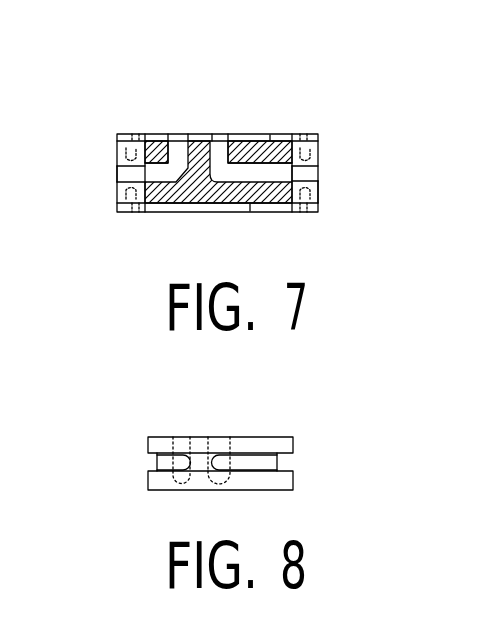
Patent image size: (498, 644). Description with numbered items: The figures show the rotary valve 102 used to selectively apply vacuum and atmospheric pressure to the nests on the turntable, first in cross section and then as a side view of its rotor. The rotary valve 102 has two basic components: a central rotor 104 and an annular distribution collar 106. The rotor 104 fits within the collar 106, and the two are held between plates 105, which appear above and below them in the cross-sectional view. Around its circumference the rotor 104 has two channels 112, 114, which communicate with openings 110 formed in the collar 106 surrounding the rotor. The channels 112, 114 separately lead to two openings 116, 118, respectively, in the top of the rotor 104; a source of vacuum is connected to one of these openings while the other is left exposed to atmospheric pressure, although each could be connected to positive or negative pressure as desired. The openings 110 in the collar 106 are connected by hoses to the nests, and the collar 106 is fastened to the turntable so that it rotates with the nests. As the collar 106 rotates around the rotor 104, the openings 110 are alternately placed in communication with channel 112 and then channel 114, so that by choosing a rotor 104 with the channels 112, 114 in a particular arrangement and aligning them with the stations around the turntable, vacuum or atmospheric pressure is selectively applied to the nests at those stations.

In FIG. 7, the rotary valve 102 is at (119, 121).
In FIG. 7, the central rotor 104 is at (203, 200).
In FIG. 8, the central rotor 104 is at (297, 420).
In FIG. 7, the plates 105 is at (277, 141).
In FIG. 7, the annular distribution collar 106 is at (118, 185).
In FIG. 7, the openings 110 is at (318, 172).
In FIG. 8, the channel 112 is at (283, 461).
In FIG. 8, the channel 114 is at (156, 461).
In FIG. 7, the opening 116 is at (221, 141).
In FIG. 8, the opening 116 is at (221, 437).
In FIG. 7, the opening 118 is at (180, 141).
In FIG. 8, the opening 118 is at (182, 437).